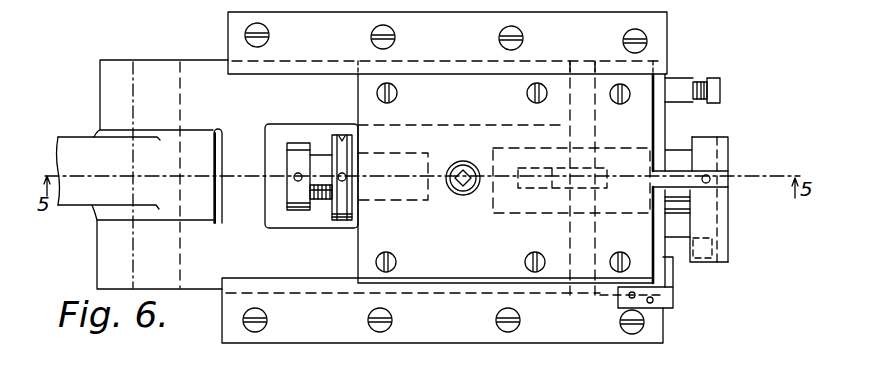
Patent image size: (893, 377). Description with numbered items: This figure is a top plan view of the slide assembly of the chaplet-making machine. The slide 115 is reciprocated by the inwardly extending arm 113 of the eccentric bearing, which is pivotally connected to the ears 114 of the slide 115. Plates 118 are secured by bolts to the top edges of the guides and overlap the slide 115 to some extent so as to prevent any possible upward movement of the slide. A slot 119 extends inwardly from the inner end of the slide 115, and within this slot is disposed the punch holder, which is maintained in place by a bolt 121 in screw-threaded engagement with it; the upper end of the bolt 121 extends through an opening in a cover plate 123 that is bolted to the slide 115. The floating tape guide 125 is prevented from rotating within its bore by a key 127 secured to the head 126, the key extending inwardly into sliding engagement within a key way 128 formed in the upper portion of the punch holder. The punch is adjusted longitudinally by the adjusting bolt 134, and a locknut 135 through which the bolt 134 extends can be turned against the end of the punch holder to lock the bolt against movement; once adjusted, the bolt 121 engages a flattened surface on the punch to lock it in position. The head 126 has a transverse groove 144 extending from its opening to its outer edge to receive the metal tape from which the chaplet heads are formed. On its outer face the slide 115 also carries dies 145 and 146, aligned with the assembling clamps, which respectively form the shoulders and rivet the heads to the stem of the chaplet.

The arm 113 is at (80, 212).
The ears 114 is at (108, 90).
The slide 115 is at (311, 157).
The plates 118 is at (232, 31).
The slot 119 is at (283, 158).
The bolt 121 is at (462, 196).
The cover plate 123 is at (505, 178).
The floating tape guide 125 is at (676, 158).
The head 126 is at (728, 160).
The key 127 is at (707, 184).
The key way 128 is at (534, 192).
The adjusting bolt 134 is at (319, 198).
The locknut 135 is at (343, 140).
The transverse groove 144 is at (717, 228).
The die 145 is at (716, 103).
The die 146 is at (678, 247).